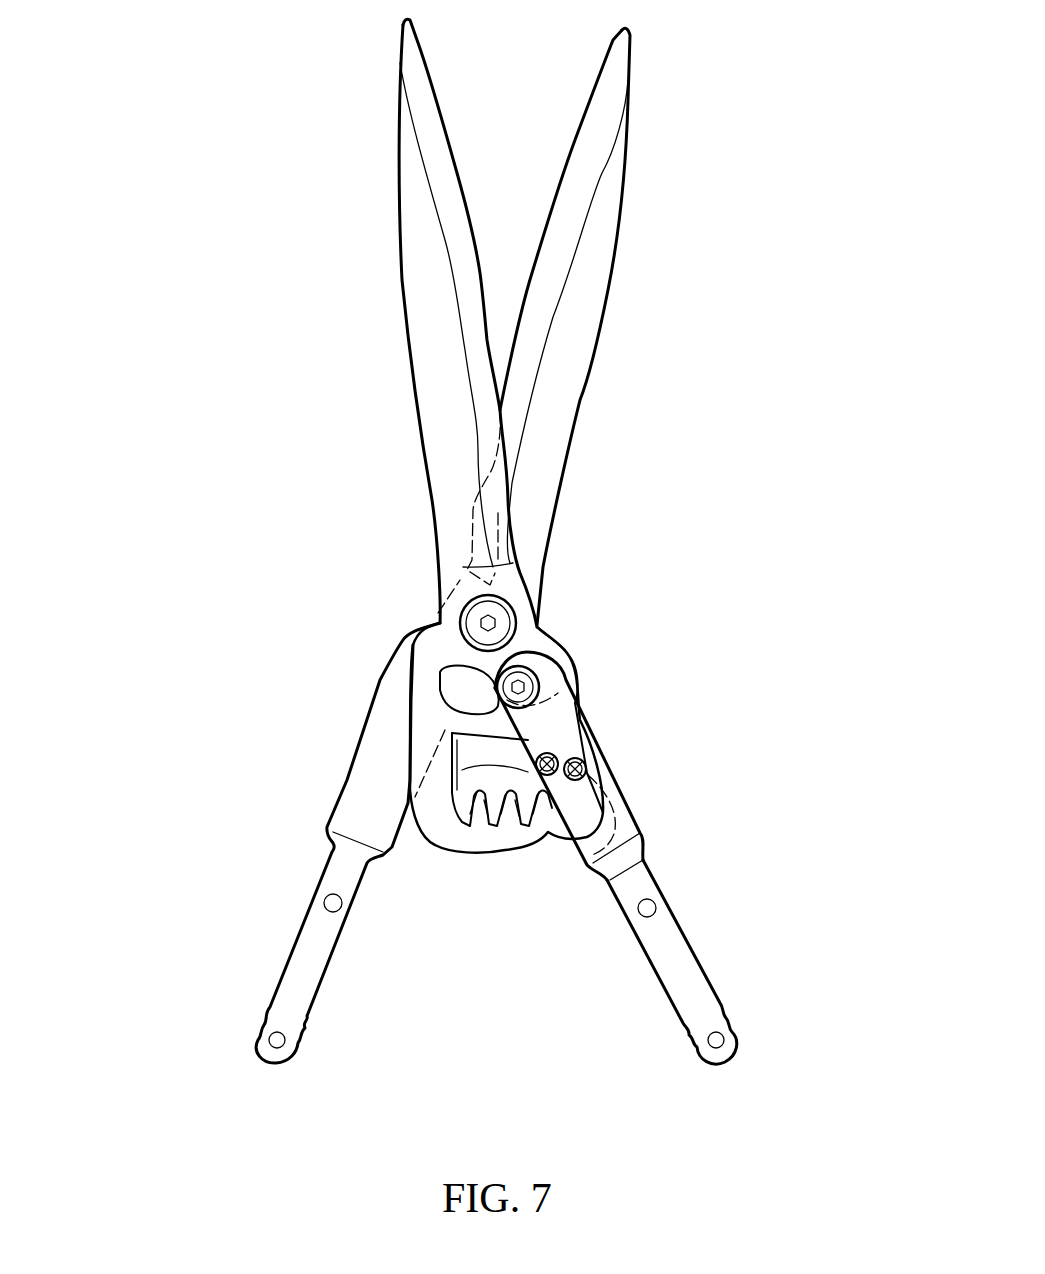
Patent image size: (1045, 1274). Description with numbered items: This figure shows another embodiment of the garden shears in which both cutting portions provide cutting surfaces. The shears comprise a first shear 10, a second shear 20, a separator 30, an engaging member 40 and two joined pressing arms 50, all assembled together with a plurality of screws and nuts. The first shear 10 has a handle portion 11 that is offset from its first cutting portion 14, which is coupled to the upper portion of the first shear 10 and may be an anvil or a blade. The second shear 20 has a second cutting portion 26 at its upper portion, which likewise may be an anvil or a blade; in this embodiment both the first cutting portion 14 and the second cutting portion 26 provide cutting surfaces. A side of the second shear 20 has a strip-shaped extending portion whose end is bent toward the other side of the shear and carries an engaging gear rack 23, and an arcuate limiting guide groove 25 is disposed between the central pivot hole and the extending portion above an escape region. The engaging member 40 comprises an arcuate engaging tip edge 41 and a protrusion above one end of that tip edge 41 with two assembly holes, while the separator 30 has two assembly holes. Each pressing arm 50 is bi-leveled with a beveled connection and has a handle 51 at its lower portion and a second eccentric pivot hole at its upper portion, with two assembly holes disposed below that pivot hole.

The first shear 10 is at (580, 490).
The first cutting portion 14 is at (797, 352).
The second shear 20 is at (404, 448).
The second cutting portion 26 is at (433, 292).
The engaging gear rack 23 is at (543, 825).
The arcuate limiting guide groove 25 is at (463, 687).
The separator 30 is at (568, 751).
The engaging member 40 is at (590, 778).
The arcuate engaging tip edge 41 is at (458, 833).
The handle portion 11 is at (297, 978).
The pressing arm 50 is at (686, 899).
The handle 51 is at (683, 970).